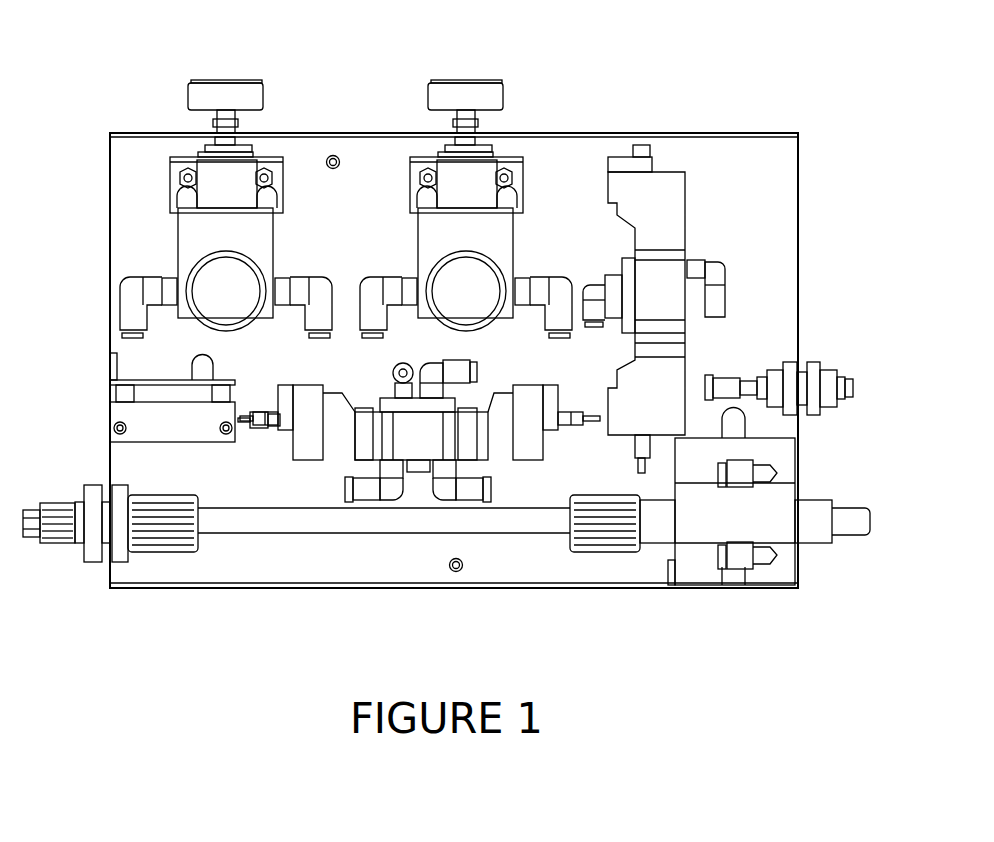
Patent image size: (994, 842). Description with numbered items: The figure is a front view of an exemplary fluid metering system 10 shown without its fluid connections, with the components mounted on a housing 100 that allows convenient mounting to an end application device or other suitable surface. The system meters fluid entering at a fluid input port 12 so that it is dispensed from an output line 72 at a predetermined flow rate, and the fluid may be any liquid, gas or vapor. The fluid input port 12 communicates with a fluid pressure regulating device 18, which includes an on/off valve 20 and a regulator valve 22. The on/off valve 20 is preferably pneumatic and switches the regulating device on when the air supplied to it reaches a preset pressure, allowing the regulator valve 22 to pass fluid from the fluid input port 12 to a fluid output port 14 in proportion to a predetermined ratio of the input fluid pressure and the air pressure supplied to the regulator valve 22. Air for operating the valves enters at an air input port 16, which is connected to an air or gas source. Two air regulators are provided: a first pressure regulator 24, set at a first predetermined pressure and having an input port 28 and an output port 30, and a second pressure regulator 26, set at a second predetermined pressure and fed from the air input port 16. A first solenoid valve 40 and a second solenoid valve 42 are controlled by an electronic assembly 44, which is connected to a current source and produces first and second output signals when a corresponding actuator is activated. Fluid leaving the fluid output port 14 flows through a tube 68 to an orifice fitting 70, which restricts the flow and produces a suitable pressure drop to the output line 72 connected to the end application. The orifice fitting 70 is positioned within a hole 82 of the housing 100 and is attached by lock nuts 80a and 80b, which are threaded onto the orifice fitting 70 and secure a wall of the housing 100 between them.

The fluid metering system 10 is at (590, 56).
The fluid input port 12 is at (815, 530).
The fluid output port 14 is at (653, 530).
The air input port 16 is at (812, 362).
The fluid pressure regulating device 18 is at (770, 448).
The on/off valve 20 is at (733, 565).
The regulator valve 22 is at (730, 470).
The first pressure regulator 24 is at (232, 95).
The second pressure regulator 26 is at (463, 80).
The input port 28 is at (125, 283).
The output port 30 is at (318, 279).
The first solenoid valve 40 is at (608, 193).
The second solenoid valve 42 is at (520, 462).
The electronic assembly 44 is at (177, 441).
The tube 68 is at (383, 534).
The orifice fitting 70 is at (183, 550).
The output line 72 is at (33, 535).
The lock nut 80a is at (95, 495).
The lock nut 80b is at (120, 490).
The hole 82 is at (110, 547).
The housing 100 is at (185, 133).